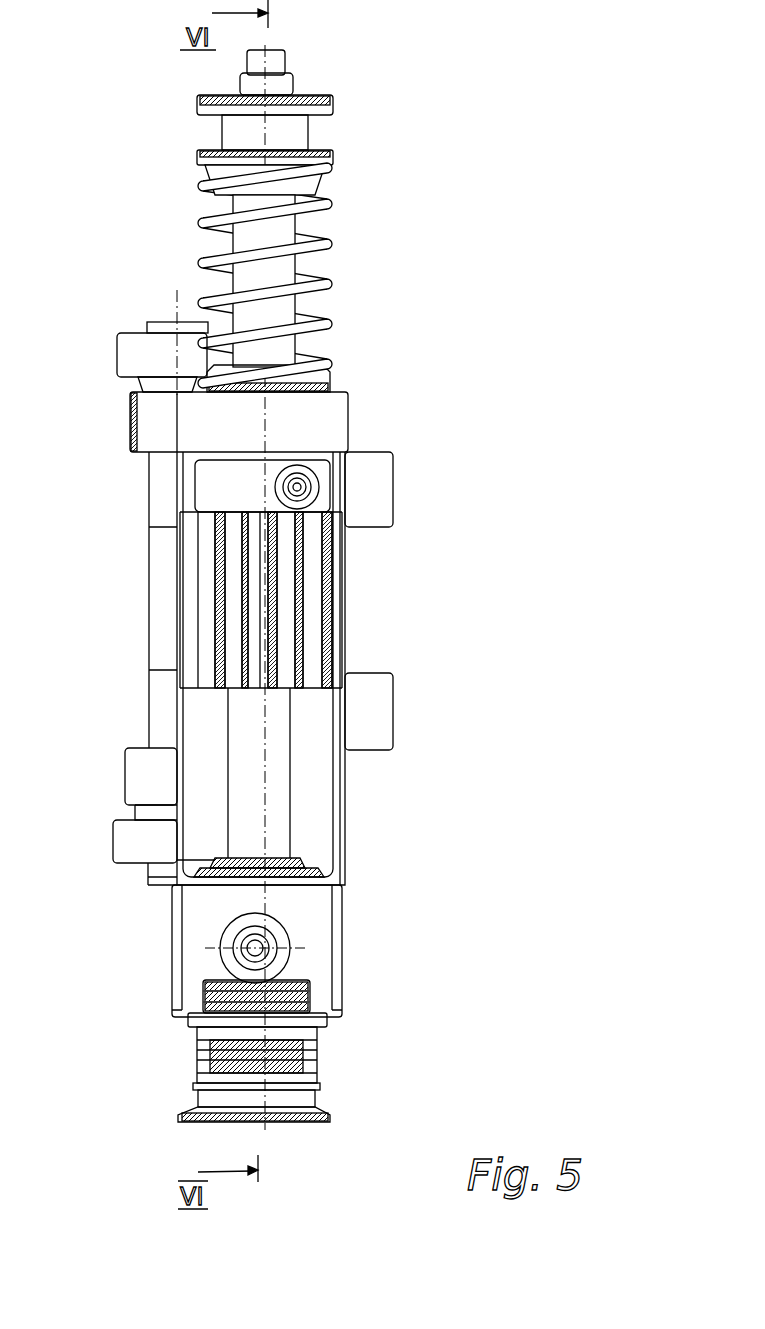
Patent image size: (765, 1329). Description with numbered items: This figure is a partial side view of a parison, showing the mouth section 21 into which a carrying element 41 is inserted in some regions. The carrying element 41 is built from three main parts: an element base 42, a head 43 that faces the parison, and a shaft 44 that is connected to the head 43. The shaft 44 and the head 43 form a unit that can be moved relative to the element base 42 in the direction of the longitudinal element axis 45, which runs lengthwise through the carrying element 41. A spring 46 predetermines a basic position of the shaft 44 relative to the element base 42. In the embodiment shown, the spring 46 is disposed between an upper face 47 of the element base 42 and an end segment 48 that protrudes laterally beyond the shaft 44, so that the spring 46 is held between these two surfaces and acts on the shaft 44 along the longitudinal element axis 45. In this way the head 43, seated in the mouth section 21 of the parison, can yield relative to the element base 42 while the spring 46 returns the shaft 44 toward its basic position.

The mouth section 21 is at (172, 1068).
The carrying element 41 is at (338, 603).
The element base 42 is at (330, 803).
The head 43 is at (362, 998).
The shaft 44 is at (313, 266).
The longitudinal element axis 45 is at (318, 245).
The spring 46 is at (265, 267).
The upper face 47 is at (332, 388).
The end segment 48 is at (200, 152).